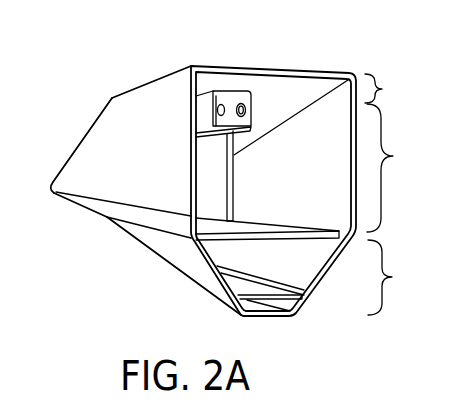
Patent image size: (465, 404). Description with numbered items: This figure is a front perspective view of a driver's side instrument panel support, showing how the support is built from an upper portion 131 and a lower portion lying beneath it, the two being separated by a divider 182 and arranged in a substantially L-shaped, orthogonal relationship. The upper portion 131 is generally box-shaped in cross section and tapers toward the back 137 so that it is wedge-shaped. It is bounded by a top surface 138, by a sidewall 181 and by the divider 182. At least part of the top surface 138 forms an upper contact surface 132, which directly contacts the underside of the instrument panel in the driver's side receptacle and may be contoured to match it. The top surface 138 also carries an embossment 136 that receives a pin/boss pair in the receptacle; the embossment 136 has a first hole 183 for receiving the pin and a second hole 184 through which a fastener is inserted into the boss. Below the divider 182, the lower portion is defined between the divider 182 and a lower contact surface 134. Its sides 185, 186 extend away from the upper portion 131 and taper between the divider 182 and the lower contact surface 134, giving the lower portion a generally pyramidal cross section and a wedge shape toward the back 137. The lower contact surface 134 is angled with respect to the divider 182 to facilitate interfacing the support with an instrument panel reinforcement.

The upper portion 131 is at (403, 168).
The upper contact surface 132 is at (79, 143).
The lower contact surface 134 is at (286, 303).
The embossment 136 is at (251, 121).
The back 137 is at (46, 187).
The top surface 138 is at (142, 85).
The sidewall 181 is at (192, 177).
The divider 182 is at (196, 238).
The first hole 183 is at (221, 104).
The second hole 184 is at (242, 104).
The side of lower portion 185 is at (220, 275).
The side of lower portion 186 is at (341, 298).